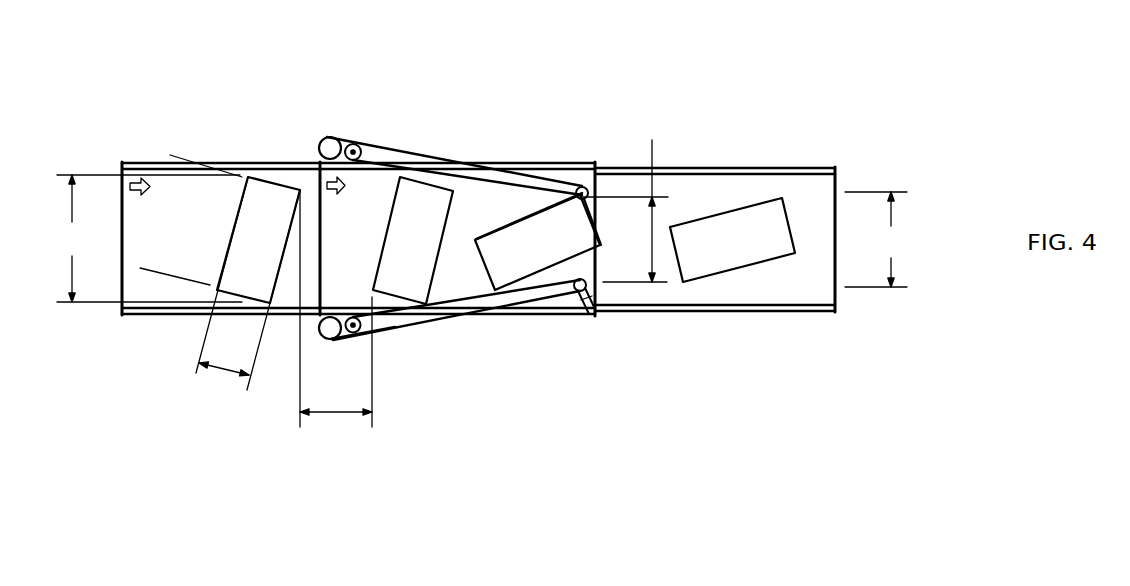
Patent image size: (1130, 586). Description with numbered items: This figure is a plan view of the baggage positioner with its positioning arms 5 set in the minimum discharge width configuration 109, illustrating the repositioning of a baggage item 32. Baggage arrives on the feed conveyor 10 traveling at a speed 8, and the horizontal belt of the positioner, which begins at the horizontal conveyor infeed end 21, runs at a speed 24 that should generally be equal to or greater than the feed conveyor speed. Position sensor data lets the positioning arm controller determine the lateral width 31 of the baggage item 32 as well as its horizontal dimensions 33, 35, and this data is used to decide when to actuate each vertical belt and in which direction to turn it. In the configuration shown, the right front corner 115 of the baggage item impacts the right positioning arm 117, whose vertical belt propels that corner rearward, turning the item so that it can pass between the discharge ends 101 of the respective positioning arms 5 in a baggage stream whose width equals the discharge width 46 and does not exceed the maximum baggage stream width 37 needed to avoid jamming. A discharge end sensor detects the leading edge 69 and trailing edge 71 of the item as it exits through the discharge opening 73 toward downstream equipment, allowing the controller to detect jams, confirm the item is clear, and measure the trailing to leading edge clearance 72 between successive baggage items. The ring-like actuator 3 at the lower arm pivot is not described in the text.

The actuator link 3 is at (619, 363).
The positioning arms 5 is at (454, 252).
The speed of the feed conveyor 8 is at (113, 156).
The feed conveyor 10 is at (445, 263).
The horizontal conveyor infeed end 21 is at (380, 372).
The speed of the horizontal belt 24 is at (304, 109).
The lateral width 31 is at (149, 238).
The baggage item 32 is at (506, 231).
The horizontal dimension 33 is at (194, 197).
The horizontal dimension 35 is at (199, 363).
The maximum baggage stream width 37 is at (876, 239).
The discharge width 46 is at (652, 140).
The leading edge 69 is at (638, 177).
The trailing edge 71 is at (529, 166).
The trailing to leading edge clearance 72 is at (300, 412).
The discharge opening 73 is at (628, 330).
The discharge ends 101 is at (645, 246).
The minimum discharge width configuration 109 is at (464, 264).
The right front corner 115 is at (466, 329).
The right positioning arm 117 is at (403, 359).